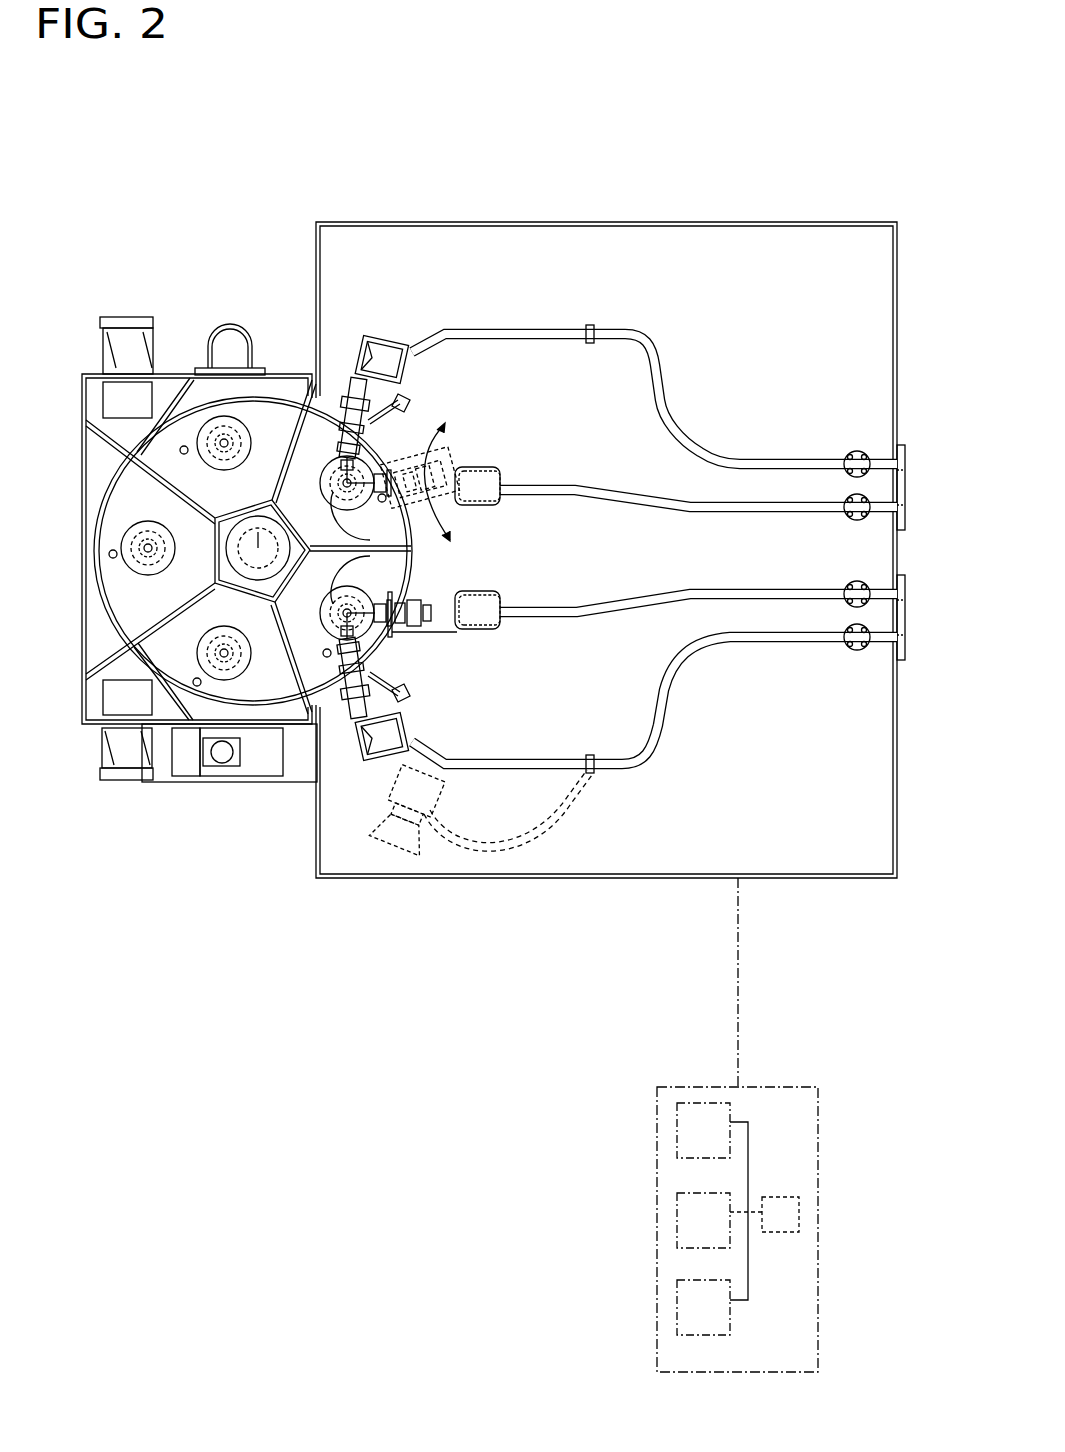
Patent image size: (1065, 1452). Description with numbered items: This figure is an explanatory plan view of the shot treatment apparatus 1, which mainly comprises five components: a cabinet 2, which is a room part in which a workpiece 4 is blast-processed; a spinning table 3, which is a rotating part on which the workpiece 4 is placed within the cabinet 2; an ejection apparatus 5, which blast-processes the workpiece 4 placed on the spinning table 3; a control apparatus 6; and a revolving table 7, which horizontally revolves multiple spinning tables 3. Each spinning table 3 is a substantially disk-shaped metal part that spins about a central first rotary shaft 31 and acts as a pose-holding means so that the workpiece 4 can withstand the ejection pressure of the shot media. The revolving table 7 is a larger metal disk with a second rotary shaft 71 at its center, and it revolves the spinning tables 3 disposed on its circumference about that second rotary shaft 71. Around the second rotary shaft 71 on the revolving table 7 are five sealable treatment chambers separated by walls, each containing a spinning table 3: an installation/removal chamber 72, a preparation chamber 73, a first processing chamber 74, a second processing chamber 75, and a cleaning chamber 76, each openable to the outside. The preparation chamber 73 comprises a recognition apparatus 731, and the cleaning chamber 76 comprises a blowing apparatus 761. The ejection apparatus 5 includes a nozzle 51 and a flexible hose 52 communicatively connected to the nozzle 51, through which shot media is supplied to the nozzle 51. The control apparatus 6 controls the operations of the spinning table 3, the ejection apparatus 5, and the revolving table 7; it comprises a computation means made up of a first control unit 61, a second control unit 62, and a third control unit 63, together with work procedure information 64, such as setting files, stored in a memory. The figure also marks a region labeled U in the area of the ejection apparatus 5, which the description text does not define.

The shot treatment apparatus 1 is at (310, 126).
The cabinet 2 is at (430, 222).
The spinning table 3 is at (212, 640).
The workpiece 4 is at (140, 560).
The ejection apparatus 5 is at (712, 386).
The control apparatus 6 is at (780, 1125).
The revolving table 7 is at (277, 416).
The first rotary shaft 31 is at (140, 548).
The nozzle 51 is at (378, 358).
The flexible hose 52 is at (652, 378).
The first control unit 61 is at (717, 1147).
The second control unit 62 is at (717, 1236).
The third control unit 63 is at (717, 1326).
The work procedure information 64 is at (796, 1229).
The second rotary shaft 71 is at (260, 546).
The installation/removal chamber 72 is at (163, 517).
The preparation chamber 73 is at (275, 634).
The first processing chamber 74 is at (339, 592).
The second processing chamber 75 is at (335, 459).
The cleaning chamber 76 is at (237, 506).
The recognition apparatus 731 is at (258, 752).
The blowing apparatus 761 is at (226, 344).
The unit U is at (480, 629).